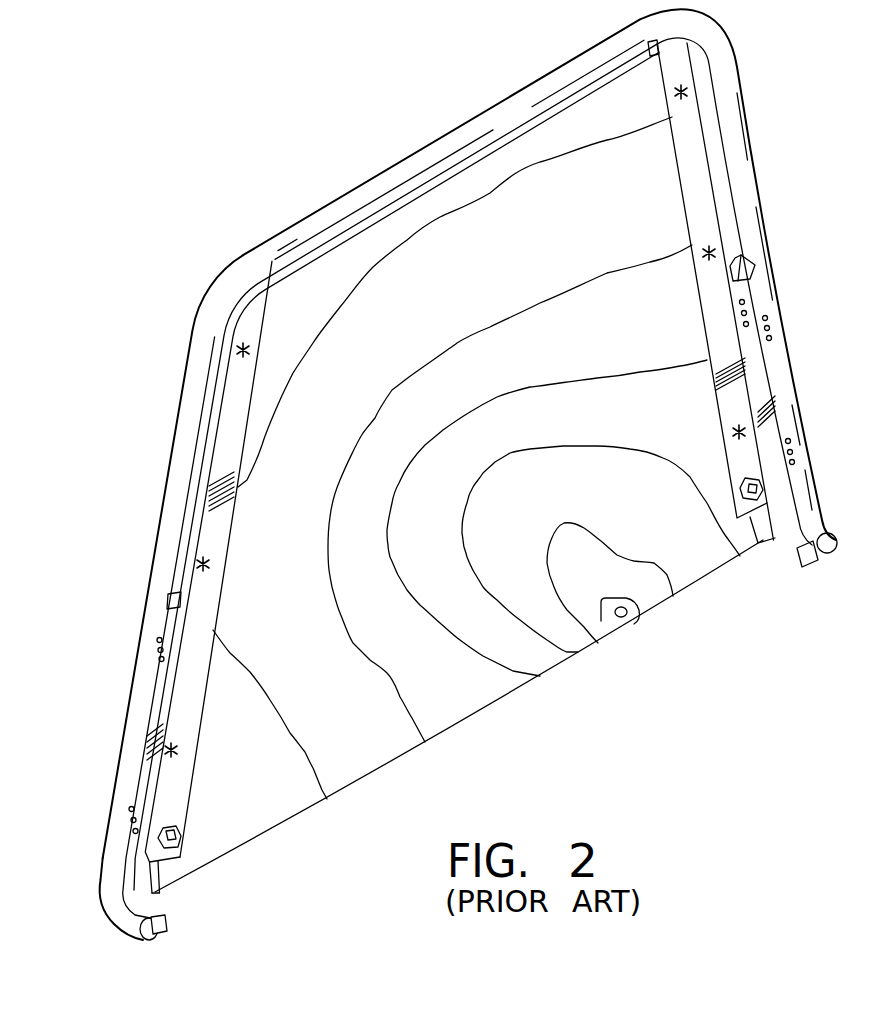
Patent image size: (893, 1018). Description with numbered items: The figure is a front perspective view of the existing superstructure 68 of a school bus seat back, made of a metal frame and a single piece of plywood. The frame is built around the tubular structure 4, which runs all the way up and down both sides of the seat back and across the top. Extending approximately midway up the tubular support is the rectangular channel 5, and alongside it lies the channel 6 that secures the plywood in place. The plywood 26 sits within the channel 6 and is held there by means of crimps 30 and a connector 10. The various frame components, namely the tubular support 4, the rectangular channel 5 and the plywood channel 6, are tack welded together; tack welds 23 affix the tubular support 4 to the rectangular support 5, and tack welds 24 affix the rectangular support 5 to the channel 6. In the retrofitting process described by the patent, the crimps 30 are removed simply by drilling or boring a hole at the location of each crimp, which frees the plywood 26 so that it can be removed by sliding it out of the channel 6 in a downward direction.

The superstructure 68 is at (168, 463).
The tubular structure 4 is at (786, 377).
The channel 6 is at (187, 697).
The tack weld 23 is at (130, 822).
The tack weld 24 is at (742, 302).
The connector 10 is at (180, 845).
The rectangular channel 5 is at (167, 932).
The crimps 30 is at (683, 92).
The plywood 26 is at (453, 703).